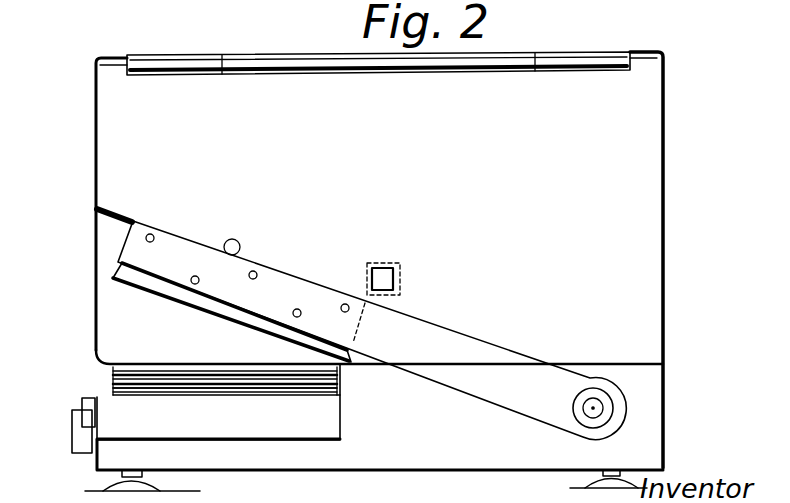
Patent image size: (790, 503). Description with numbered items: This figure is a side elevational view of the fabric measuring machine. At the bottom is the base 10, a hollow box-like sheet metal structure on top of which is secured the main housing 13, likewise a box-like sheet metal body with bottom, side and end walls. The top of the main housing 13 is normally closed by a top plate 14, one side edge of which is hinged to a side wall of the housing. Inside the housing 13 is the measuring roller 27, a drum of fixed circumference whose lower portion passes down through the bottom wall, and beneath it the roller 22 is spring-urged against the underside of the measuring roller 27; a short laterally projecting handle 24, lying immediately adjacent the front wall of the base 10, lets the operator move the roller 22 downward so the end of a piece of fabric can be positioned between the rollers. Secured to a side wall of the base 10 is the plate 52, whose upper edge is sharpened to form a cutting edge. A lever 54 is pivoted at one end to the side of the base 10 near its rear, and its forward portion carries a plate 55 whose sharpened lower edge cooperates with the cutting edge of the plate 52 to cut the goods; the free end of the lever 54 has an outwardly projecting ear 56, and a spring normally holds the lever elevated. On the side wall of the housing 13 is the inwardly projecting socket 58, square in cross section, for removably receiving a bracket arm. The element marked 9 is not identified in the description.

The base 10 is at (374, 452).
The main housing 13 is at (379, 260).
The top plate 14 is at (629, 50).
The roller 22 is at (138, 388).
The handle 24 is at (73, 447).
The measuring roller 27 is at (136, 376).
The plate 52 is at (218, 402).
The lever 54 is at (464, 345).
The plate 55 is at (256, 322).
The ear 56 is at (120, 210).
The socket 58 is at (384, 274).
The guide 9 is at (287, 385).